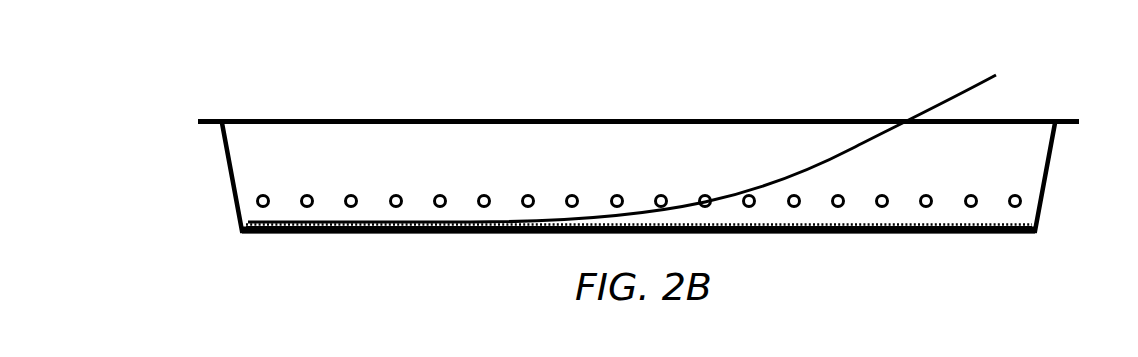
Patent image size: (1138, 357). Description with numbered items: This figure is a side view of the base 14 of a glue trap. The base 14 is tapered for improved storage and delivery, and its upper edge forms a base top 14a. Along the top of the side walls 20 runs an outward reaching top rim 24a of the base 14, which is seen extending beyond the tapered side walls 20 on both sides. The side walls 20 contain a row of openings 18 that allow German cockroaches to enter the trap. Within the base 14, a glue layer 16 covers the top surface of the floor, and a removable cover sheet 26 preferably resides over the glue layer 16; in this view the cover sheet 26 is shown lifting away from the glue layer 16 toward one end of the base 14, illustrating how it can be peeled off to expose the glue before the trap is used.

The base 14 is at (420, 88).
The base top 14a is at (145, 124).
The outward reaching top rim 24a is at (203, 117).
The side walls 20 is at (222, 175).
The glue layer 16 is at (918, 224).
The openings 18 is at (1021, 204).
The removable cover sheet 26 is at (853, 148).